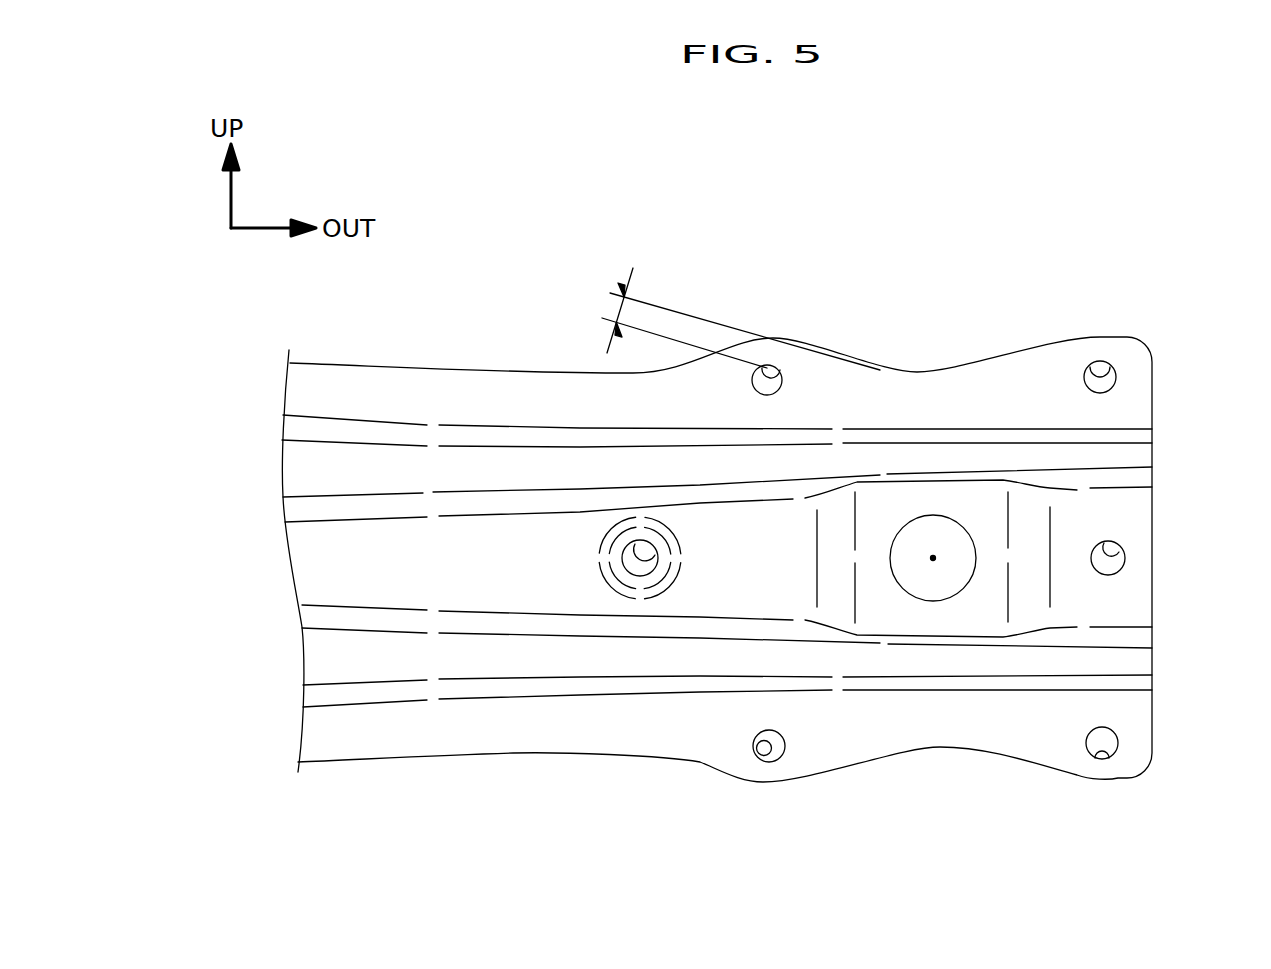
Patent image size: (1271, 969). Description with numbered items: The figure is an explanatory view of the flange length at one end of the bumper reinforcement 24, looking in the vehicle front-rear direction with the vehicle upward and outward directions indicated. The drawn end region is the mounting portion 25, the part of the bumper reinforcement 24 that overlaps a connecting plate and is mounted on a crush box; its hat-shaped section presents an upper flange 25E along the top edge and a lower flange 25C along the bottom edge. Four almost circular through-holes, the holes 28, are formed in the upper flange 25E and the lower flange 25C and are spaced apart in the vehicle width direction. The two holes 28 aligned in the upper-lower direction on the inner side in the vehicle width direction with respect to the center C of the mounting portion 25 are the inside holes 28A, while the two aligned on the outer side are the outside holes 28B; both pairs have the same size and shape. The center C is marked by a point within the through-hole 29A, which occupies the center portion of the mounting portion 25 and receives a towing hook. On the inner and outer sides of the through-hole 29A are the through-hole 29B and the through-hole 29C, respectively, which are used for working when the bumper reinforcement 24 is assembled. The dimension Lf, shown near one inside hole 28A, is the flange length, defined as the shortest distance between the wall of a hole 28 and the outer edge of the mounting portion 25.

The bumper reinforcement 24 is at (408, 757).
The mounting portion 25 is at (930, 391).
The upper flange 25E is at (845, 378).
The lower flange 25C is at (830, 750).
The holes 28 is at (944, 555).
The inside holes 28A is at (768, 810).
The outside holes 28B is at (1107, 810).
The through-hole 29A is at (923, 515).
The through-hole 29B is at (655, 555).
The through-hole 29C is at (1122, 553).
The center C is at (935, 560).
The flange length Lf is at (617, 308).